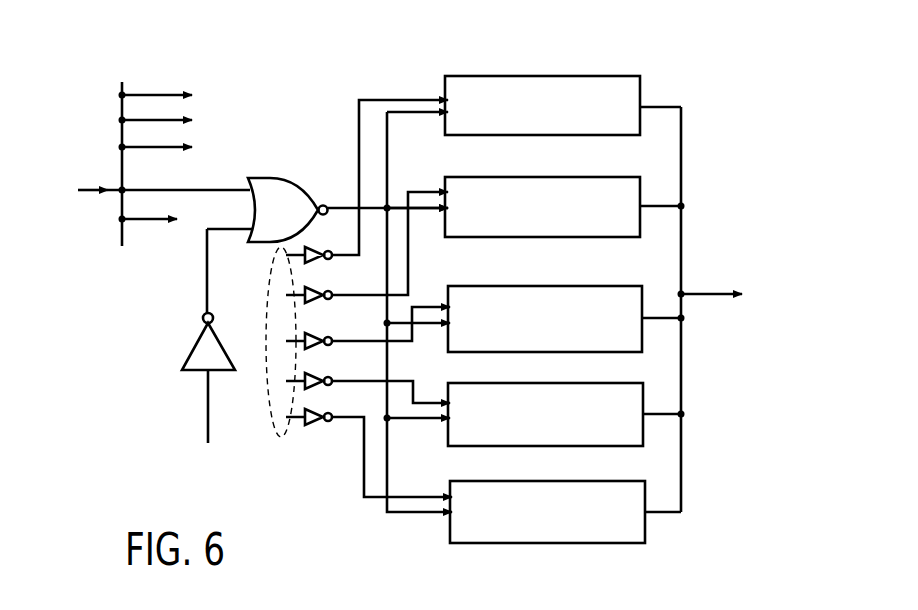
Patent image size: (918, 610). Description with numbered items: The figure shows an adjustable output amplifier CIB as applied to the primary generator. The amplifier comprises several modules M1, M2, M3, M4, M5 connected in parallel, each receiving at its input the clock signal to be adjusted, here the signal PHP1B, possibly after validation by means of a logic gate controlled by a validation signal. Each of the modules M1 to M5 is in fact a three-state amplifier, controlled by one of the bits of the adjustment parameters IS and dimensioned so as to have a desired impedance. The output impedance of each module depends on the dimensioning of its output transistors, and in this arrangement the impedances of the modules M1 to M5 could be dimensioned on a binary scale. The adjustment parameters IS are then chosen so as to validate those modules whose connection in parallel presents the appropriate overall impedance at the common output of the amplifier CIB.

The input clock signal PHP1B is at (80, 188).
The adjustment parameters IS is at (281, 437).
The module M1 is at (563, 105).
The module M2 is at (563, 207).
The module M3 is at (564, 319).
The module M4 is at (564, 414).
The module M5 is at (565, 512).
The amplifier CIB is at (661, 91).